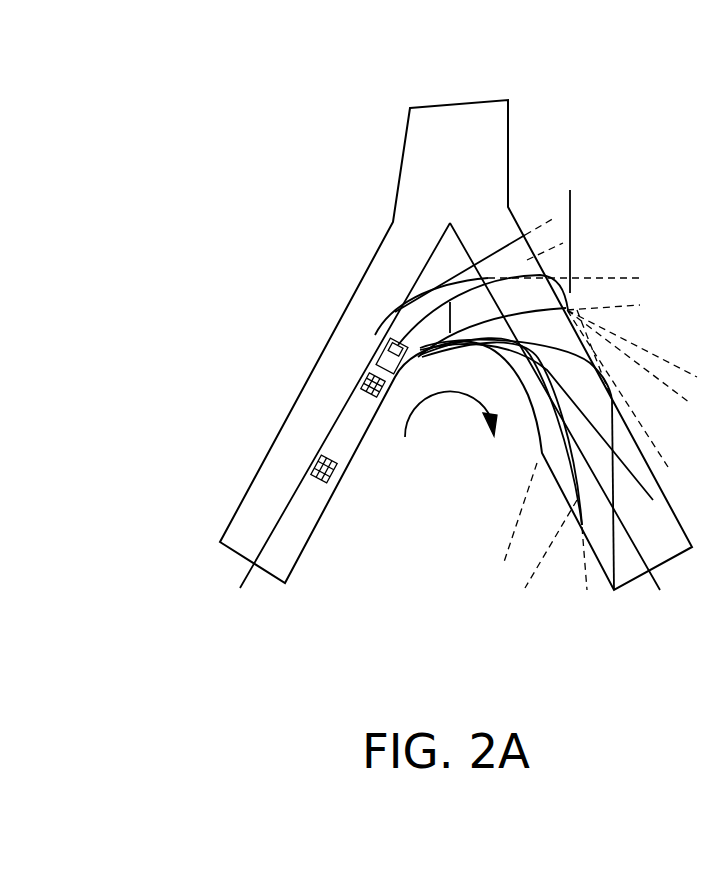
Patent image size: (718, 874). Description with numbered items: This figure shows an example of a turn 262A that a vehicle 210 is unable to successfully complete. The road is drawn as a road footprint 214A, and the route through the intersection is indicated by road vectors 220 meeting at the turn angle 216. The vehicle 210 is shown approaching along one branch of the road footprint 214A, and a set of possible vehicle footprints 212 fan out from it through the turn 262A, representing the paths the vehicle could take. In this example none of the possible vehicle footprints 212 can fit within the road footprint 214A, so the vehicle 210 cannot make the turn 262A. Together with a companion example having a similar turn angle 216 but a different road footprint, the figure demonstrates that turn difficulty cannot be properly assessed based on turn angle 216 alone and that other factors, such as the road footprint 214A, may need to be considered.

The road footprint 214A is at (455, 123).
The road vectors 220 is at (421, 276).
The turn angle 216 is at (395, 320).
The vehicle footprints 212 is at (550, 242).
The vehicle 210 is at (337, 452).
The turn 262A is at (452, 393).